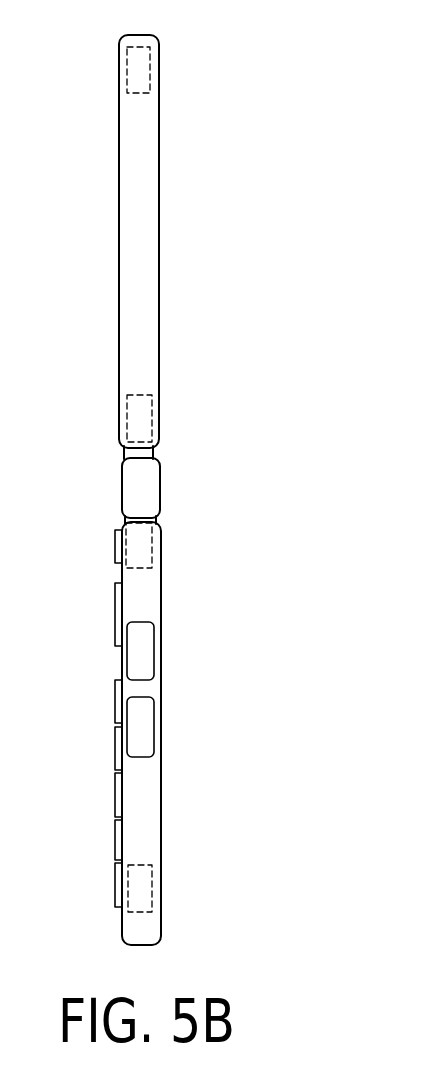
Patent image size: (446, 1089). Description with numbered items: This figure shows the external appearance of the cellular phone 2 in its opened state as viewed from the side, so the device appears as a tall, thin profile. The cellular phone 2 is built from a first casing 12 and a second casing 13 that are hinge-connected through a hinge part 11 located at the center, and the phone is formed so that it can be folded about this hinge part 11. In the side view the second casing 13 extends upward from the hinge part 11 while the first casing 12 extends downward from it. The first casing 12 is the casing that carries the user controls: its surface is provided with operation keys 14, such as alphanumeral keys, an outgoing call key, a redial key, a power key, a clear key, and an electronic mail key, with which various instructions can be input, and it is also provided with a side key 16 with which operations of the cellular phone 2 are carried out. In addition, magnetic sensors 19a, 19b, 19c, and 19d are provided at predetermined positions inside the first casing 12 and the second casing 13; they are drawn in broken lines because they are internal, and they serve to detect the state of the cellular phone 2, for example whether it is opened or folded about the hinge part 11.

The cellular phone 2 is at (151, 490).
The hinge part 11 is at (160, 490).
The first casing 12 is at (161, 598).
The second casing 13 is at (160, 250).
The operation keys 14 is at (81, 718).
The side key 16 is at (154, 650).
The magnetic sensor 19a is at (150, 68).
The magnetic sensor 19b is at (152, 890).
The magnetic sensor 19c is at (152, 415).
The magnetic sensor 19d is at (152, 545).